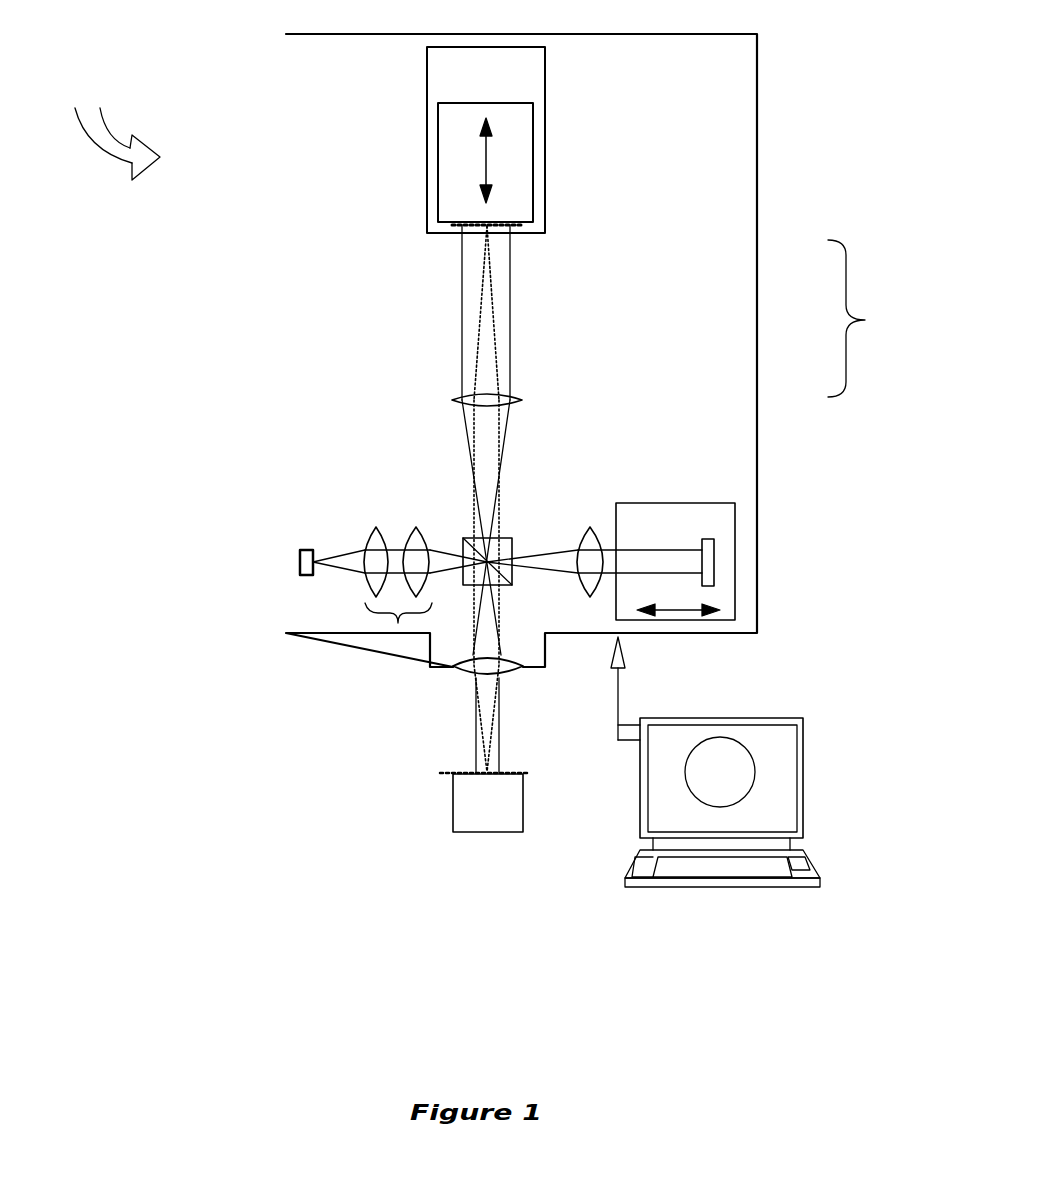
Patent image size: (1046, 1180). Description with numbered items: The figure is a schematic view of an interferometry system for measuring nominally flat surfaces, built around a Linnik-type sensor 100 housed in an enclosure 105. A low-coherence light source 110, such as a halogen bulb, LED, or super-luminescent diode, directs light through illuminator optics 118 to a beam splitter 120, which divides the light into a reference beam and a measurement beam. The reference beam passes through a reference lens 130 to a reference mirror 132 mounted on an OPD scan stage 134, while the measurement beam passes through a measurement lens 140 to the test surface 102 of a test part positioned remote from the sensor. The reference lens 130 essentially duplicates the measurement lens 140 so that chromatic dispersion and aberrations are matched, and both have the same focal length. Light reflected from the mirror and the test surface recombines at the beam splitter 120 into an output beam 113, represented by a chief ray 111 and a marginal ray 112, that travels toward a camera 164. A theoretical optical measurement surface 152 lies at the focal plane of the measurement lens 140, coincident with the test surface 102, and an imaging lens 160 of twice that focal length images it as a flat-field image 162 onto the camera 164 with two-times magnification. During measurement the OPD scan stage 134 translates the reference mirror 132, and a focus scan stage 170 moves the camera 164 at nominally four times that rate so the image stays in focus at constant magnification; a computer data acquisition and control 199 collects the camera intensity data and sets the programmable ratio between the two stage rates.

The sensor 100 is at (117, 121).
The test surface 102 is at (487, 776).
The enclosure 105 is at (757, 180).
The light source 110 is at (300, 569).
The chief ray 111 is at (510, 315).
The marginal ray 112 is at (498, 352).
The output beam 113 is at (874, 318).
The illuminator optics 118 is at (396, 622).
The beam splitter 120 is at (487, 560).
The reference lens 130 is at (595, 528).
The reference mirror 132 is at (714, 560).
The OPD scan stage 134 is at (682, 620).
The measurement lens 140 is at (453, 668).
The optical measurement surface 152 is at (440, 773).
The imaging lens 160 is at (452, 400).
The flat-field image 162 is at (455, 226).
The camera 164 is at (438, 163).
The focus scan stage 170 is at (545, 140).
The computer data acquisition and control 199 is at (813, 887).